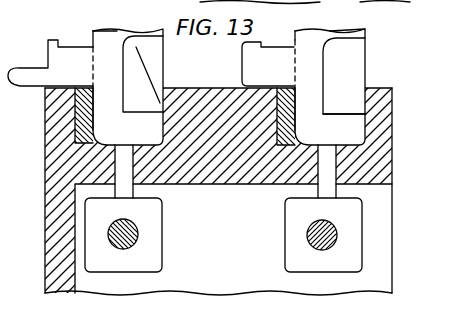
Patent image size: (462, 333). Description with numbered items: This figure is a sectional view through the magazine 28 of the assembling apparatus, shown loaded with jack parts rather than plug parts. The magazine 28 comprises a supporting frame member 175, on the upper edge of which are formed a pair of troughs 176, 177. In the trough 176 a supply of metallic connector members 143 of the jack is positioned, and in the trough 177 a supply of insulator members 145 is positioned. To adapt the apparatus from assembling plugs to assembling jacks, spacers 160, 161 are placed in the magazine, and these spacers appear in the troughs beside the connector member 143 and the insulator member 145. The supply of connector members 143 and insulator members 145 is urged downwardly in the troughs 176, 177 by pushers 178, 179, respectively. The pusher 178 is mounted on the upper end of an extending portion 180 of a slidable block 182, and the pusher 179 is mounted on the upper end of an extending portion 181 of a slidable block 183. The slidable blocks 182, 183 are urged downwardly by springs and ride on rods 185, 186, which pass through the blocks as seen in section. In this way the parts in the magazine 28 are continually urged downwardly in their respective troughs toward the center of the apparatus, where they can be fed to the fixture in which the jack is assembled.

The magazine 28 is at (204, 78).
The metallic connector member 143 is at (116, 33).
The insulator member 145 is at (315, 70).
The spacer 160 is at (78, 110).
The spacer 161 is at (281, 92).
The supporting frame member 175 is at (56, 230).
The trough 176 is at (90, 82).
The trough 177 is at (358, 99).
The pusher 178 is at (150, 53).
The pusher 179 is at (350, 40).
The extending portion 180 is at (123, 192).
The extending portion 181 is at (318, 191).
The slidable block 182 is at (153, 265).
The slidable block 183 is at (295, 253).
The rod 185 is at (137, 237).
The rod 186 is at (337, 233).